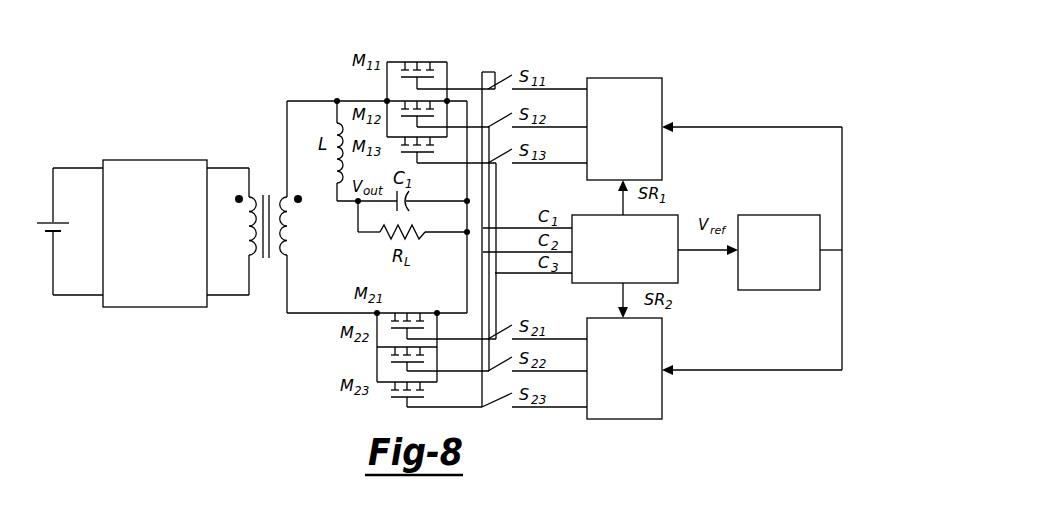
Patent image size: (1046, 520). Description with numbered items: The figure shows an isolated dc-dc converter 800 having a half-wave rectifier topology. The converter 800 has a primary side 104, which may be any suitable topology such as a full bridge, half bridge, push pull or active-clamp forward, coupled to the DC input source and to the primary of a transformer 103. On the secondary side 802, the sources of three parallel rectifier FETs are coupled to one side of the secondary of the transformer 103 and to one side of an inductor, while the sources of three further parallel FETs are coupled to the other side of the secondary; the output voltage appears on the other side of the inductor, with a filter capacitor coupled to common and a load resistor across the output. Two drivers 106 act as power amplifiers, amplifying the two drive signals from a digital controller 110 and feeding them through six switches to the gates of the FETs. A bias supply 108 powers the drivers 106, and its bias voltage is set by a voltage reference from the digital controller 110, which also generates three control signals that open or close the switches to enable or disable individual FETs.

The transformer 103 is at (265, 108).
The primary side 104 is at (122, 152).
The drivers 106 is at (638, 78).
The bias supply 108 is at (771, 291).
The digital controller 110 is at (674, 214).
The dc-dc converter 800 is at (259, 391).
The secondary side 802 is at (728, 75).